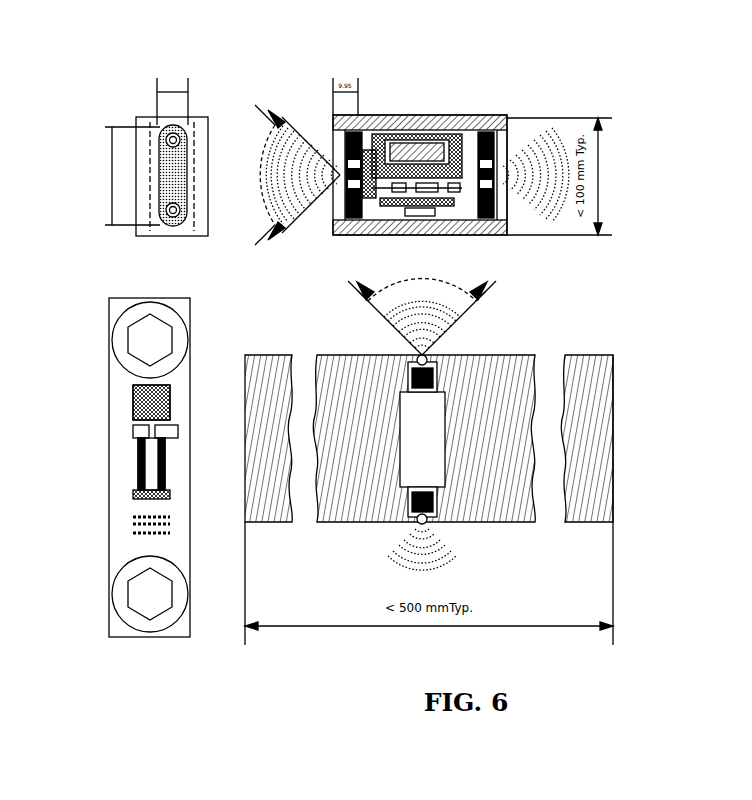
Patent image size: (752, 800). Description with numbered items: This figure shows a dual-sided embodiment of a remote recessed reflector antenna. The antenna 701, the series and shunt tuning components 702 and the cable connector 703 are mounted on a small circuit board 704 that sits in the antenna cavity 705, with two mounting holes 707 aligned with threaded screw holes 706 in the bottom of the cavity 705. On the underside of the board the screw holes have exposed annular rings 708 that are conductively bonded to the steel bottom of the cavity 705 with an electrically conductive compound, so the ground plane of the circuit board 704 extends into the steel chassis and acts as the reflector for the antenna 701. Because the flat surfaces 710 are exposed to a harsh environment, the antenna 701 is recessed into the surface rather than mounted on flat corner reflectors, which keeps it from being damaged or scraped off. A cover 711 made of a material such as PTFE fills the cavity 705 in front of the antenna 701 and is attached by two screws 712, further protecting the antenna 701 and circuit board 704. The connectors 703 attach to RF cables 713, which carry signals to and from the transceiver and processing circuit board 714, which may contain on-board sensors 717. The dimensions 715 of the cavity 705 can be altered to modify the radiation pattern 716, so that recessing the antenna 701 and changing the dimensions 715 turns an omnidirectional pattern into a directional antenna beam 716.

The antenna 701 is at (130, 472).
The series and shunt tuning components 702 is at (170, 405).
The cable connector 703 is at (112, 335).
The circuit board 704 is at (505, 235).
The antenna cavity 705 is at (440, 505).
The threaded screw holes 706 is at (392, 523).
The mounting holes 707 is at (150, 596).
The annular rings 708 is at (125, 620).
The surfaces 710 is at (613, 522).
The cover 711 is at (512, 165).
The screws 712 is at (346, 132).
The RF cables 713 is at (340, 232).
The transceiver and processing circuit board 714 is at (400, 235).
The dimensions 715 is at (90, 170).
The radiation pattern 716 is at (290, 130).
The on-board sensors 717 is at (466, 134).